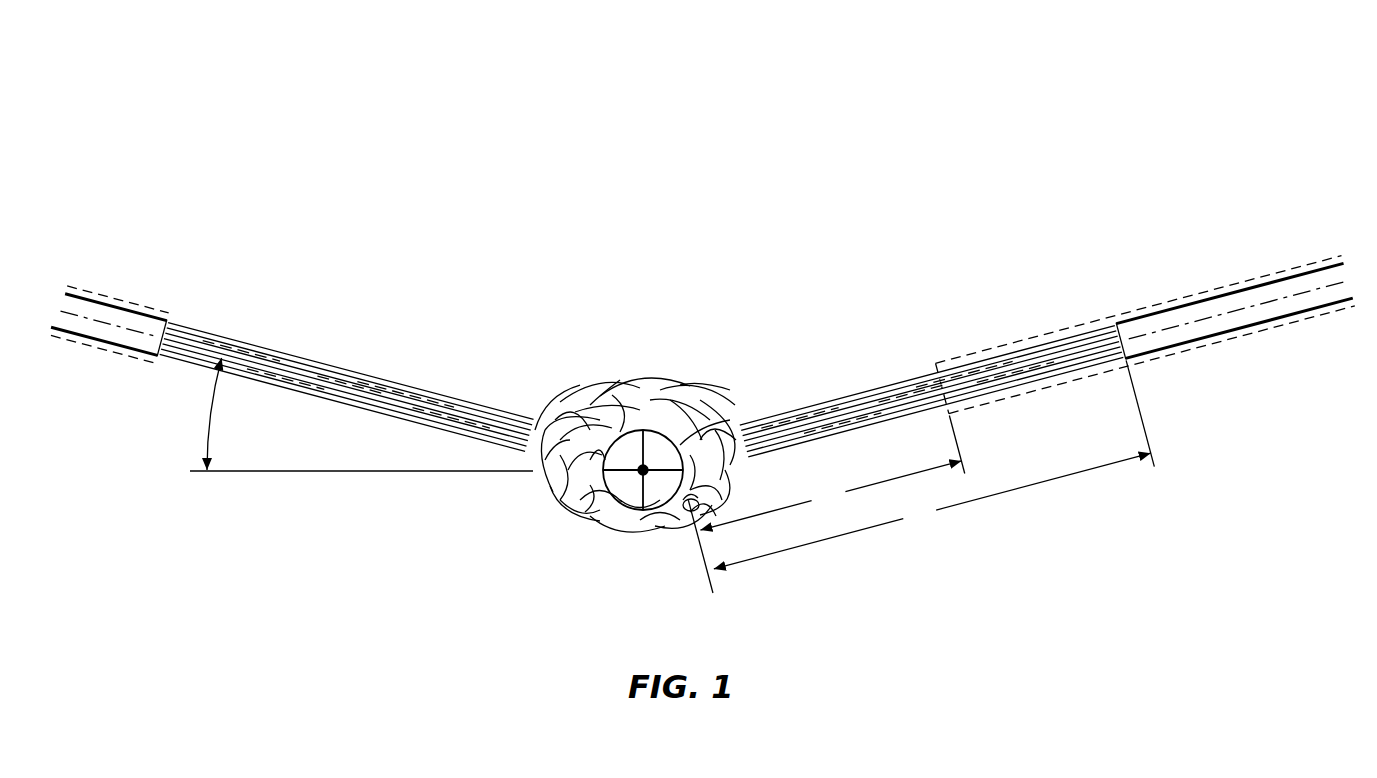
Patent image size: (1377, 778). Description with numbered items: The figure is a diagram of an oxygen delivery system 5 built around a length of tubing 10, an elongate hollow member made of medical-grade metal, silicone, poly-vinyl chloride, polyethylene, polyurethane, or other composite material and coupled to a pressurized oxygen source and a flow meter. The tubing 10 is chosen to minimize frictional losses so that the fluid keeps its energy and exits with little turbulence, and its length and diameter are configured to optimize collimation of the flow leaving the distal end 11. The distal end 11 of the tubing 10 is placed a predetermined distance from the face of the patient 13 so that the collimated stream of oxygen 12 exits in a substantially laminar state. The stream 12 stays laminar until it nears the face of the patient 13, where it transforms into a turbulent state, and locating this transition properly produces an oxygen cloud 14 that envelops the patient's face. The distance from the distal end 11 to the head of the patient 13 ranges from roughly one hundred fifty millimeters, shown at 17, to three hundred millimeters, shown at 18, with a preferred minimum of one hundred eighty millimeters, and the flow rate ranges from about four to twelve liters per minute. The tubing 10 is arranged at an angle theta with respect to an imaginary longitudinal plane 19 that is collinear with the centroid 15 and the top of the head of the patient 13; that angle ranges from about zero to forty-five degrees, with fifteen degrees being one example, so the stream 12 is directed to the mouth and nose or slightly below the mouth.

The oxygen delivery system 5 is at (1162, 128).
The length of tubing 10 is at (129, 322).
The distal end 11 is at (168, 321).
The stream of oxygen 12 is at (400, 390).
The patient 13 is at (690, 430).
The oxygen cloud 14 is at (693, 508).
The centroid 15 is at (608, 490).
The 150 mm distance 17 is at (831, 504).
The 300 mm distance 18 is at (921, 471).
The imaginary longitudinal plane 19 is at (373, 471).